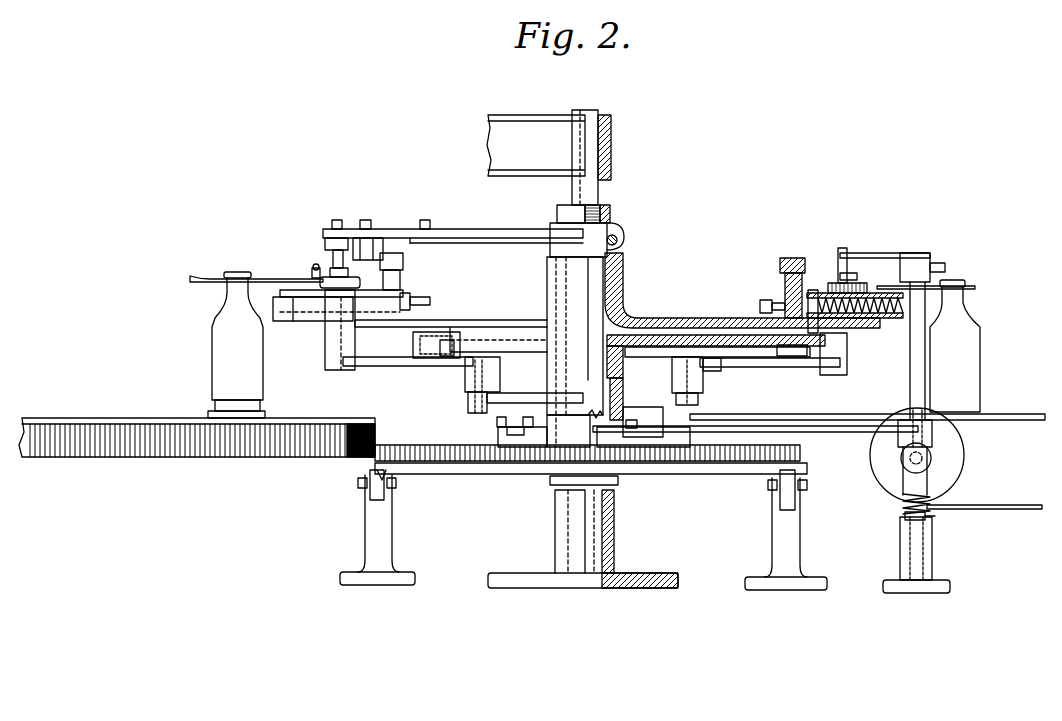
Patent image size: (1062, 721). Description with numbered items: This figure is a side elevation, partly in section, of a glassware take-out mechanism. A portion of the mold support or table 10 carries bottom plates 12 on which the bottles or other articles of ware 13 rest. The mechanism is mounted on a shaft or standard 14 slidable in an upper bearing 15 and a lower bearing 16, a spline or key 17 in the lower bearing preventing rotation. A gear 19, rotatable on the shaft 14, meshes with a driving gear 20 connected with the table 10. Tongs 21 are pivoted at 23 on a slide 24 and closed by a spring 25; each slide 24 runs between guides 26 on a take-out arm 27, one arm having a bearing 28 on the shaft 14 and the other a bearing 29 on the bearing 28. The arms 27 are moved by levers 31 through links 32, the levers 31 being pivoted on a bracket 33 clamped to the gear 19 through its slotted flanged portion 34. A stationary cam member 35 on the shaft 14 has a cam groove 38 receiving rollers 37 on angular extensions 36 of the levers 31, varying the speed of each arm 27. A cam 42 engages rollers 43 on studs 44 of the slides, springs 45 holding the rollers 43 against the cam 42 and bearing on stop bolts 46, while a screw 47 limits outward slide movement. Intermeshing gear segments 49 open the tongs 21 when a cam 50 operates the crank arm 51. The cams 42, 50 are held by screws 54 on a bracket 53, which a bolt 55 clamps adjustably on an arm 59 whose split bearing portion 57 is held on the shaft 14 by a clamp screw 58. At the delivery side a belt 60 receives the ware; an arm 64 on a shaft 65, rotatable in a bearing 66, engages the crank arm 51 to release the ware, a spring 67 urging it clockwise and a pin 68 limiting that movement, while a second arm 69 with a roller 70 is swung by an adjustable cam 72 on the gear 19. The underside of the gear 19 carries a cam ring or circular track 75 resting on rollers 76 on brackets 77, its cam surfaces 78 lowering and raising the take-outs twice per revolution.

The mold support or table 10 is at (93, 418).
The bottom plates 12 is at (212, 405).
The bottles or other articles of ware 13 is at (212, 380).
The shaft or standard 14 is at (600, 195).
The upper bearing 15 is at (612, 148).
The lower bearing 16 is at (555, 535).
The spline or key 17 is at (608, 555).
The gear 19 is at (462, 474).
The driving gear 20 is at (136, 458).
The tongs 21 is at (198, 278).
The pivot 23 is at (332, 272).
The slide 24 is at (403, 292).
The spring 25 is at (312, 271).
The guides 26 is at (430, 301).
The take-out arms or supports 27 is at (510, 322).
The bearing 28 is at (624, 264).
The bearing 29 is at (624, 282).
The levers 31 is at (400, 369).
The links 32 is at (318, 323).
The bracket 33 is at (510, 403).
The flanged portion 34 is at (497, 445).
The stationary cam member 35 is at (413, 346).
The angular extensions 36 is at (702, 390).
The rollers 37 is at (452, 346).
The cam groove 38 is at (794, 357).
The slide operating cam 42 is at (383, 242).
The rollers 43 is at (403, 261).
The studs 44 is at (785, 290).
The springs 45 is at (880, 320).
The stop bolts 46 is at (813, 298).
The screw 47 is at (760, 307).
The gear segments 49 is at (862, 286).
The cam 50 is at (340, 242).
The crank arm 51 is at (328, 248).
The cam supporting bracket 53 is at (445, 238).
The screws 54 is at (337, 220).
The bolt 55 is at (427, 221).
The split bearing portion 57 is at (622, 231).
The clamp screw 58 is at (622, 240).
The arm 59 is at (512, 236).
The belt 60 is at (1000, 414).
The arm 64 is at (905, 253).
The shaft 65 is at (910, 389).
The bearing 66 is at (933, 550).
The spring 67 is at (905, 510).
The pin 68 is at (935, 520).
The second arm 69 is at (827, 433).
The roller 70 is at (690, 431).
The adjustable cam 72 is at (547, 430).
The cam ring or circular track 75 is at (652, 476).
The rollers 76 is at (372, 490).
The brackets 77 is at (365, 541).
The cam surfaces 78 is at (390, 485).